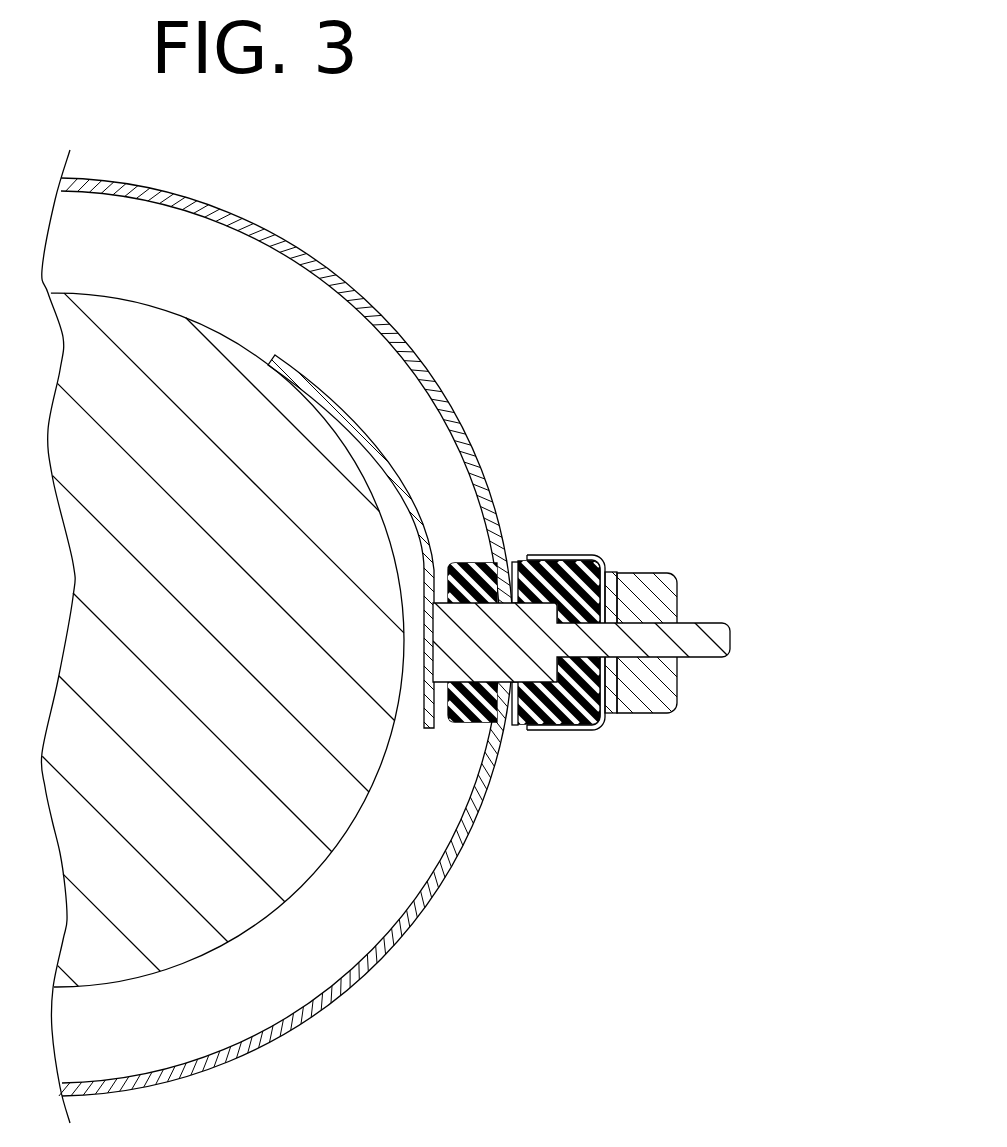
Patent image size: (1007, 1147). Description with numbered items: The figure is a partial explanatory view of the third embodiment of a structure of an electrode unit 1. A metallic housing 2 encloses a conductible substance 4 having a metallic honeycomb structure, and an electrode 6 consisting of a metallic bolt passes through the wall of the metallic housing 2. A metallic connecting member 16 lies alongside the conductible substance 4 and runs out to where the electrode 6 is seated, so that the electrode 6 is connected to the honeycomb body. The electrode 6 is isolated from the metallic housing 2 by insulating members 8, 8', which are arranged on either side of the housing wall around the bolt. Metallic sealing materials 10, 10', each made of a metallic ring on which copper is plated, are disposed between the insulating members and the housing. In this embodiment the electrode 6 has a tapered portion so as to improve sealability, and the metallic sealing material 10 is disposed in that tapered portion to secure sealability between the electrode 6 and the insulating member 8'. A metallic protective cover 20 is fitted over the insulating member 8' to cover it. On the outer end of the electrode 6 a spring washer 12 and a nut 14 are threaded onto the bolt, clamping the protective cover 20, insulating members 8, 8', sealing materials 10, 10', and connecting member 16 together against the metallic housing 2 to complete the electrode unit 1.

The electrode unit 1 is at (665, 668).
The metallic housing 2 is at (432, 900).
The conductible substance 4 is at (260, 895).
The electrode 6 is at (713, 627).
The insulating member 8 is at (477, 718).
The insulating member 8' is at (579, 595).
The metallic sealing material 10 is at (540, 772).
The metallic sealing material 10' is at (549, 533).
The spring washer 12 is at (612, 573).
The nut 14 is at (647, 732).
The metallic connecting member 16 is at (398, 470).
The metallic protective cover 20 is at (578, 733).